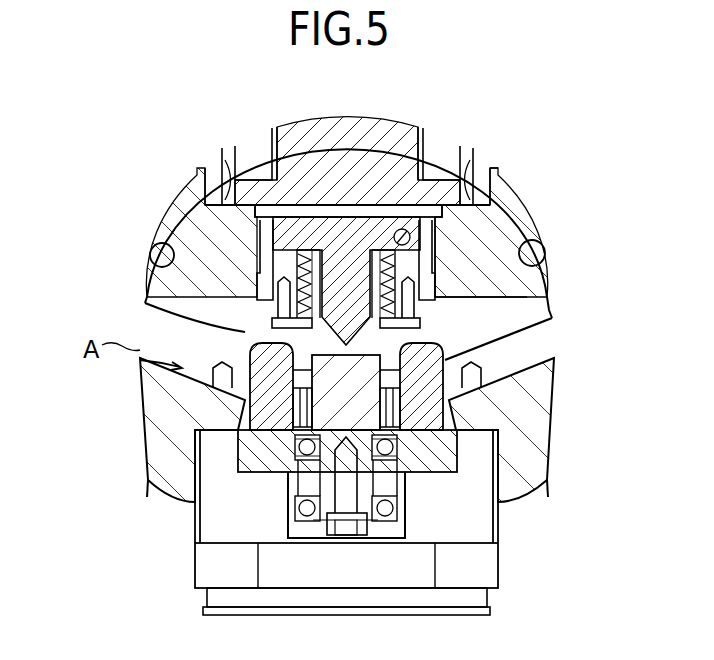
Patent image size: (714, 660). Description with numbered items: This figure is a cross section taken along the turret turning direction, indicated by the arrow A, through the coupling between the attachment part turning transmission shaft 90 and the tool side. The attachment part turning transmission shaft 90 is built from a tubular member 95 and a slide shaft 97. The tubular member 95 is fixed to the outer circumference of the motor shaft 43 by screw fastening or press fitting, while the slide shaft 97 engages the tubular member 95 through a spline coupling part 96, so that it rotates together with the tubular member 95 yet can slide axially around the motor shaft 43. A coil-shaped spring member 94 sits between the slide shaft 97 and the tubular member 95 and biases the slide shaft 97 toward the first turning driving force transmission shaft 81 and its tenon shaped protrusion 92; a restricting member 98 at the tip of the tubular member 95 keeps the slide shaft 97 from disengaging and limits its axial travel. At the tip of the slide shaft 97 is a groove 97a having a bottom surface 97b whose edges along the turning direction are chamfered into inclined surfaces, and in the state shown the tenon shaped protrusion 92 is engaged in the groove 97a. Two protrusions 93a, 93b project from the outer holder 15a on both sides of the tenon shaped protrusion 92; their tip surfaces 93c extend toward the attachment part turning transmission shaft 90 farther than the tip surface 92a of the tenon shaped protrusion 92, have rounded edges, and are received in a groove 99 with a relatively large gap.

The motor shaft 43 is at (347, 243).
The tubular member 95 is at (263, 270).
The spring member 94 is at (283, 293).
The tip surface of the tenon shaped protrusion 92a is at (240, 262).
The attachment part turning transmission shaft 90 is at (300, 322).
The tip surfaces of the protrusions 93c is at (305, 345).
The tenon shaped protrusion 92 is at (240, 398).
The protrusion 93b is at (245, 408).
The groove 99 is at (245, 440).
The first turning driving force transmission shaft 81 is at (293, 492).
The outer holder 15a is at (197, 560).
The spline coupling part 96 is at (433, 272).
The restricting member 98 is at (470, 292).
The slide shaft 97 is at (420, 318).
The protrusion 93a is at (490, 388).
The groove 97a is at (405, 400).
The bottom surface 97b is at (410, 437).